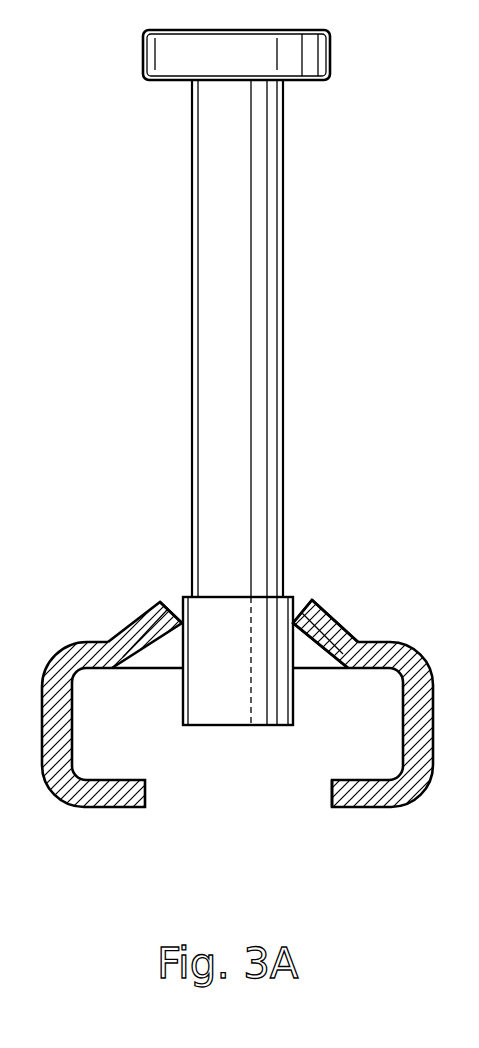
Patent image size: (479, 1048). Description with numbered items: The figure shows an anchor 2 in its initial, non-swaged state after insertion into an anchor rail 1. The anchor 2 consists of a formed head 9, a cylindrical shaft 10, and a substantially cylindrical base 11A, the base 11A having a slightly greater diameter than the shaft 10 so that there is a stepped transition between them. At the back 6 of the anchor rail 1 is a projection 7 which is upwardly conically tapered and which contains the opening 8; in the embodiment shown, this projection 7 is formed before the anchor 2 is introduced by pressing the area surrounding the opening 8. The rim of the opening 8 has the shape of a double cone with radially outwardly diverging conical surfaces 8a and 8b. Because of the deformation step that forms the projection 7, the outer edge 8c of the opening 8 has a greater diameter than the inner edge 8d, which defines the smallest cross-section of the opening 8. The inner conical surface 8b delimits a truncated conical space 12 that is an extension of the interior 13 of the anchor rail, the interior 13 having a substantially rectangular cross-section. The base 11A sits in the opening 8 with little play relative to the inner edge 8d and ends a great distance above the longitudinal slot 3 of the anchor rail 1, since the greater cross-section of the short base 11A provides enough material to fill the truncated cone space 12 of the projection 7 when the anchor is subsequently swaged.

The anchor rail 1 is at (101, 624).
The anchor 2 is at (175, 242).
The longitudinal slot 3 is at (267, 792).
The back 6 is at (380, 640).
The projection 7 is at (343, 602).
The opening 8 is at (196, 624).
The outer conical surface 8a is at (300, 598).
The inner conical surface 8b is at (323, 656).
The outer edge 8c is at (157, 597).
The inner edge 8d is at (287, 620).
The formed head 9 is at (172, 53).
The shaft 10 is at (240, 394).
The cylindrical base 11A is at (197, 710).
The truncated conical space 12 is at (167, 658).
The interior 13 is at (341, 764).